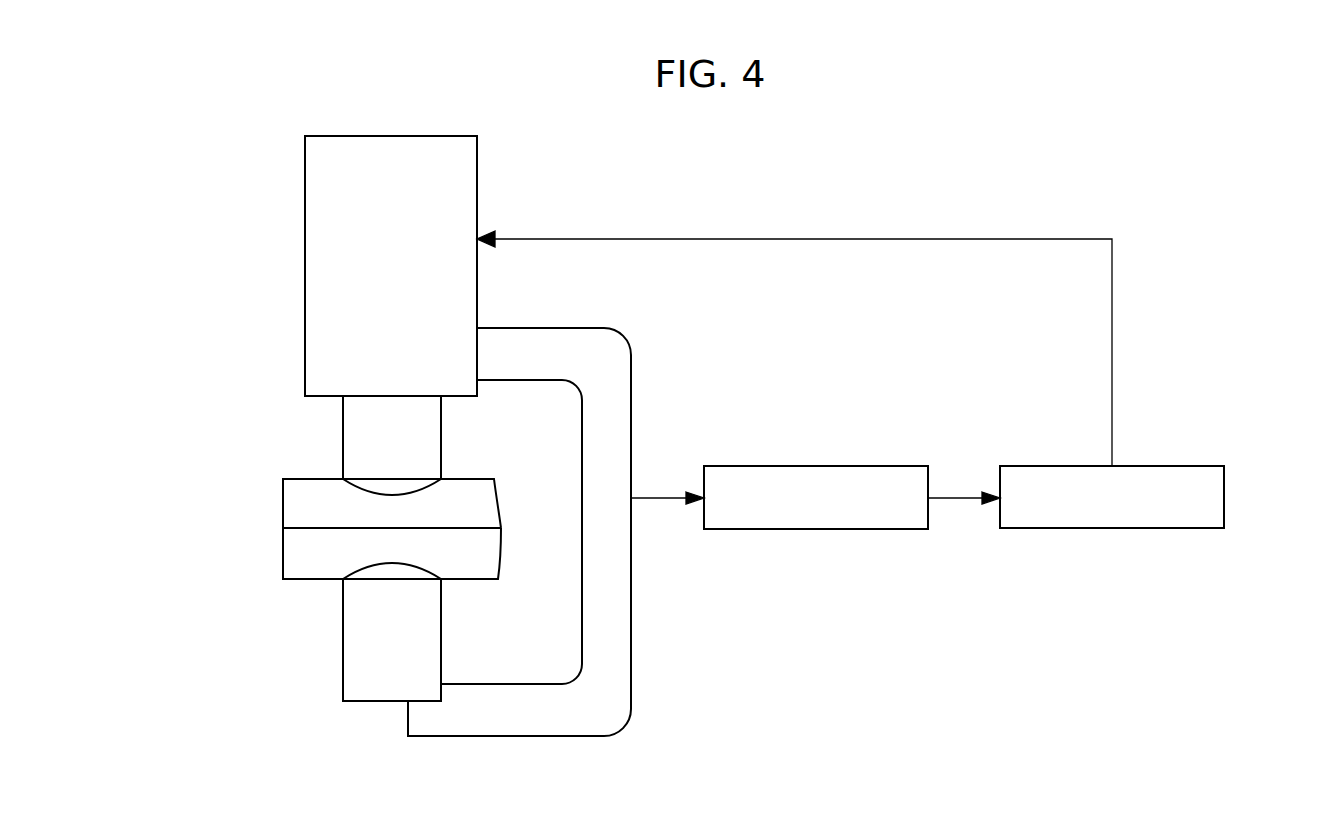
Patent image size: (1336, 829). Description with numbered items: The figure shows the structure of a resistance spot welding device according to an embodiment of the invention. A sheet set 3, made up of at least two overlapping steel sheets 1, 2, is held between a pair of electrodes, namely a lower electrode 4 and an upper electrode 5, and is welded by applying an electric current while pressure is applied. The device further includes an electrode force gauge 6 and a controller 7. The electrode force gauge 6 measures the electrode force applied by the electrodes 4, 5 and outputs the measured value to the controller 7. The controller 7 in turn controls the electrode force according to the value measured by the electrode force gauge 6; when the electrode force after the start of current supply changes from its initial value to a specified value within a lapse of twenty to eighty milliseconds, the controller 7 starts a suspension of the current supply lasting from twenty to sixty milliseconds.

The steel sheet 1 is at (283, 502).
The steel sheet 2 is at (283, 554).
The sheet set 3 is at (229, 478).
The lower electrode 4 is at (343, 653).
The upper electrode 5 is at (343, 437).
The electrode force gauge 6 is at (816, 466).
The controller 7 is at (1224, 498).